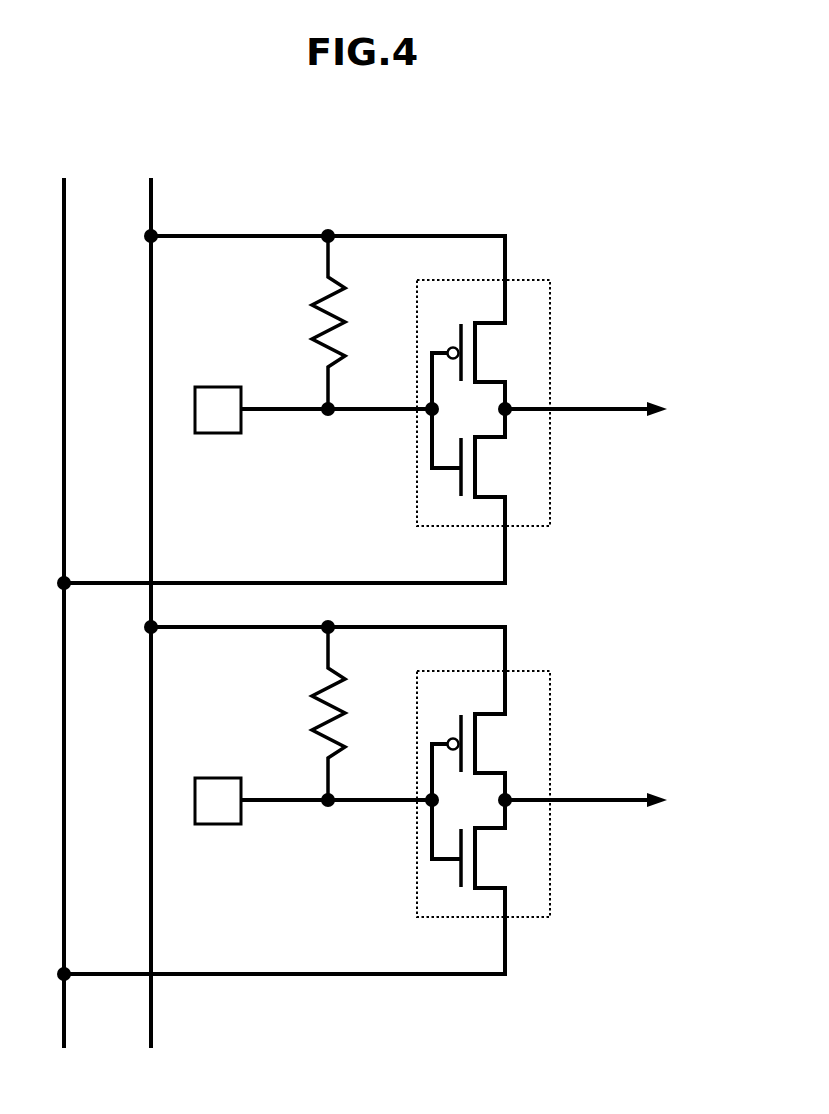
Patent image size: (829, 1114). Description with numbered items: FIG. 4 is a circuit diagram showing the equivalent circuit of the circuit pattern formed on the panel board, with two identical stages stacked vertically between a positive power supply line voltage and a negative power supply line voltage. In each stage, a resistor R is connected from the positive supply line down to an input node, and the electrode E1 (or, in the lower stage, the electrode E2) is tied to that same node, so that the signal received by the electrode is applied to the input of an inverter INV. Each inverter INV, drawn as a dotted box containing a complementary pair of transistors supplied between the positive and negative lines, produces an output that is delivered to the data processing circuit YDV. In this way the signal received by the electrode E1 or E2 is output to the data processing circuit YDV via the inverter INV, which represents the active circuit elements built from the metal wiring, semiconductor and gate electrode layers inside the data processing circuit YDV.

The resistor R is at (323, 332).
The inverter INV is at (540, 370).
The electrode E1 is at (218, 410).
The electrode E2 is at (218, 801).
The data processing circuit YDV is at (613, 606).